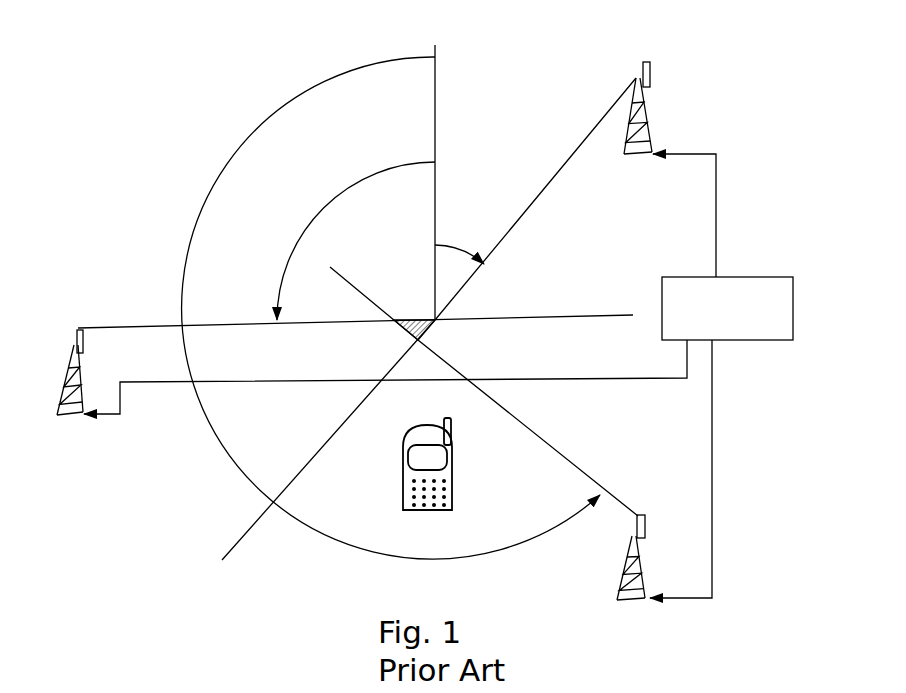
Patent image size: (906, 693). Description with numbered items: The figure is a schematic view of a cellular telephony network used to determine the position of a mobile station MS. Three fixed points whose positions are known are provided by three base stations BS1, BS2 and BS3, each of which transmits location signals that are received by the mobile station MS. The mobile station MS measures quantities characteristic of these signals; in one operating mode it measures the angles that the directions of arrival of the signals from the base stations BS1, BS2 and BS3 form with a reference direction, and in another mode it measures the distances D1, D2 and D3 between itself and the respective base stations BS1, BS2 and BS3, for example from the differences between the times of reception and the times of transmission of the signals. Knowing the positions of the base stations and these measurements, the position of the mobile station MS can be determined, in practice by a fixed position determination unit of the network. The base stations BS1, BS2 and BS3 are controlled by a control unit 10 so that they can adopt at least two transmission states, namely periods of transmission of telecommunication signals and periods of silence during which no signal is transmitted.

The control unit 10 is at (738, 277).
The base station BS1 is at (637, 124).
The base station BS2 is at (629, 571).
The base station BS3 is at (72, 389).
The mobile station MS is at (427, 464).
The distance D1 is at (429, 319).
The distance D2 is at (355, 330).
The distance D3 is at (484, 391).